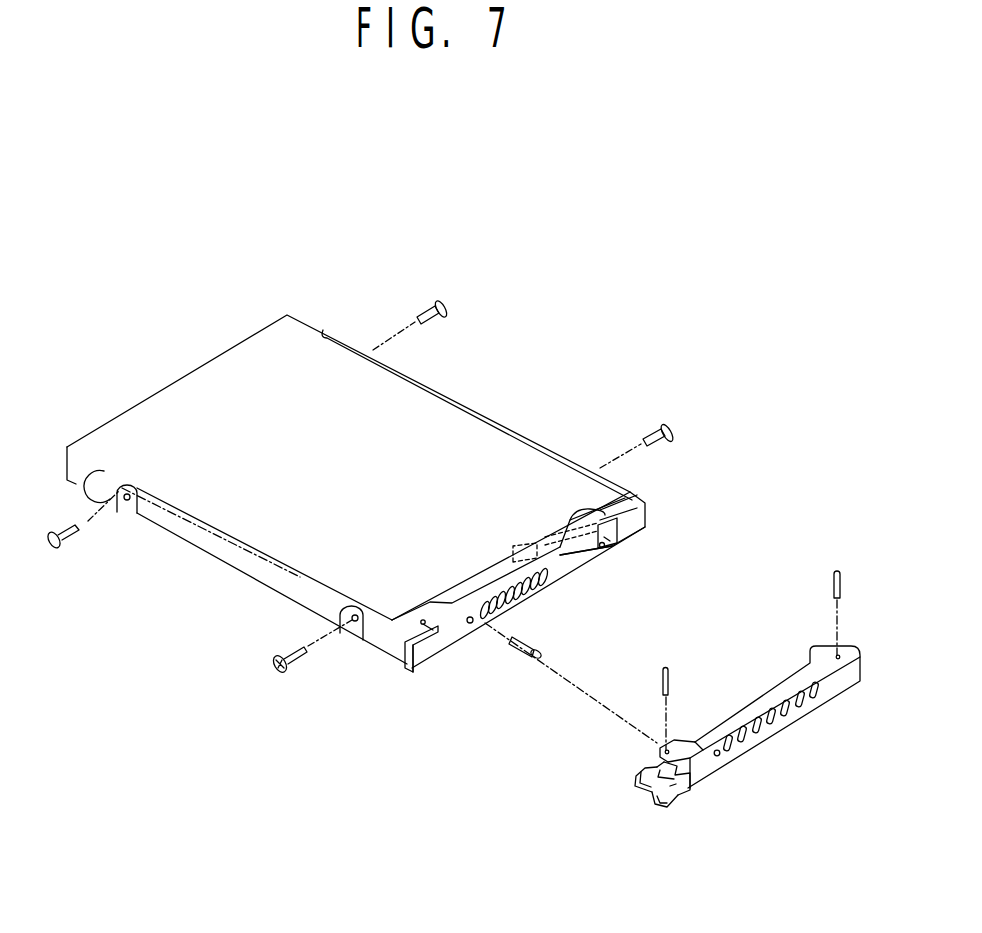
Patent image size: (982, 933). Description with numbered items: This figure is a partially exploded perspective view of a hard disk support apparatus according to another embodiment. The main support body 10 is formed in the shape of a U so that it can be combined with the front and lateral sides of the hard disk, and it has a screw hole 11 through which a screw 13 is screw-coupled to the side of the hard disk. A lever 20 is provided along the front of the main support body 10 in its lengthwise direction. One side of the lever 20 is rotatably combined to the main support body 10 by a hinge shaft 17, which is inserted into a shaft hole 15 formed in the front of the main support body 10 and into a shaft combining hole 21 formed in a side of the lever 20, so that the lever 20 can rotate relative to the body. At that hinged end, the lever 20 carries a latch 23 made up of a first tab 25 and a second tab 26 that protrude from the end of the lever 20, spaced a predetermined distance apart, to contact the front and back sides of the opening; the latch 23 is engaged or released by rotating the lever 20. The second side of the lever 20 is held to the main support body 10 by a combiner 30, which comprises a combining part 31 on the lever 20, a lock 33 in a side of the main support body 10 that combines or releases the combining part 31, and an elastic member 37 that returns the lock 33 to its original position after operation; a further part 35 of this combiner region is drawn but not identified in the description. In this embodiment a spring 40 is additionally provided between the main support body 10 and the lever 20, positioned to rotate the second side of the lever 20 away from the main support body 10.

The main support body 10 is at (385, 647).
The screw hole 11 is at (357, 628).
The screw 13 is at (714, 434).
The shaft hole 15 is at (423, 667).
The hinge shaft 17 is at (672, 678).
The lever 20 is at (750, 748).
The shaft combining hole 21 is at (690, 775).
The latch 23 is at (662, 834).
The first tab 25 is at (638, 797).
The second tab 26 is at (668, 805).
The combiner 30 is at (802, 612).
The combining part 31 is at (832, 588).
The lock 33 is at (627, 537).
The connector cover 35 is at (645, 530).
The elastic member 37 is at (602, 548).
The spring 40 is at (523, 656).